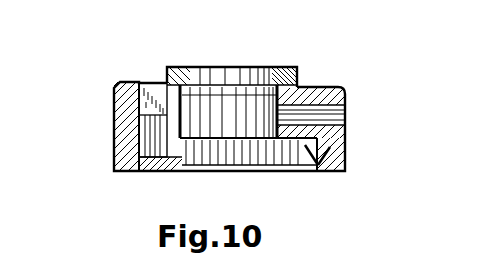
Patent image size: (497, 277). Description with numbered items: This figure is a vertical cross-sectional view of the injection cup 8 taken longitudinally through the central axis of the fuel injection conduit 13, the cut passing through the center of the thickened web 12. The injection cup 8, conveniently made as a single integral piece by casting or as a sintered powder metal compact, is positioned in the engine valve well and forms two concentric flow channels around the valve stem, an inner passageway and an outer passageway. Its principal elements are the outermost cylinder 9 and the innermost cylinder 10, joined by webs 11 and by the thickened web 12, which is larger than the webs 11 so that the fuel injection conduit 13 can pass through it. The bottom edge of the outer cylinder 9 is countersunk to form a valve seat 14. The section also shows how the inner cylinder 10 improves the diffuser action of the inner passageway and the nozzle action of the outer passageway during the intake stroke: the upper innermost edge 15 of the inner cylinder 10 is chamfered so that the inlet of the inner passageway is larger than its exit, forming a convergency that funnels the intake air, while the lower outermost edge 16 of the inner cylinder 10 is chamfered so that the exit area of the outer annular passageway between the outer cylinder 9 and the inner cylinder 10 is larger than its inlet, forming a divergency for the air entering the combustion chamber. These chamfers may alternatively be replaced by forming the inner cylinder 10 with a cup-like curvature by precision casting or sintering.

The injection cup 8 is at (186, 128).
The outermost cylinder 9 is at (113, 147).
The innermost cylinder 10 is at (165, 72).
The webs 11 is at (150, 105).
The thickened web 12 is at (310, 83).
The fuel injection conduit 13 is at (340, 110).
The valve seat 14 is at (313, 172).
The upper innermost edge 15 is at (188, 67).
The lower outermost edge 16 is at (172, 140).